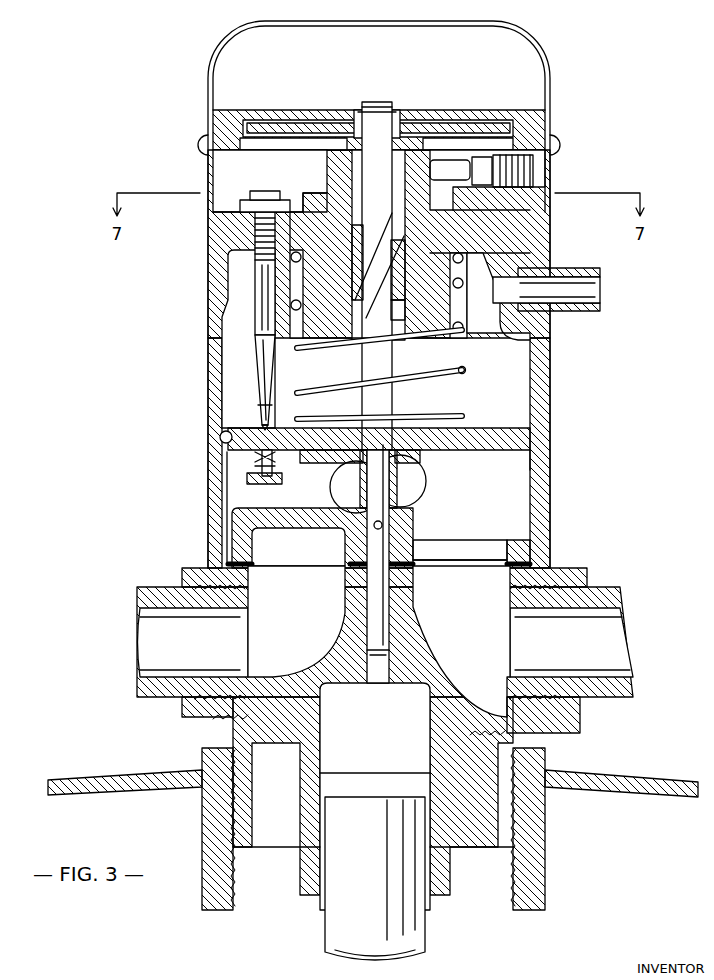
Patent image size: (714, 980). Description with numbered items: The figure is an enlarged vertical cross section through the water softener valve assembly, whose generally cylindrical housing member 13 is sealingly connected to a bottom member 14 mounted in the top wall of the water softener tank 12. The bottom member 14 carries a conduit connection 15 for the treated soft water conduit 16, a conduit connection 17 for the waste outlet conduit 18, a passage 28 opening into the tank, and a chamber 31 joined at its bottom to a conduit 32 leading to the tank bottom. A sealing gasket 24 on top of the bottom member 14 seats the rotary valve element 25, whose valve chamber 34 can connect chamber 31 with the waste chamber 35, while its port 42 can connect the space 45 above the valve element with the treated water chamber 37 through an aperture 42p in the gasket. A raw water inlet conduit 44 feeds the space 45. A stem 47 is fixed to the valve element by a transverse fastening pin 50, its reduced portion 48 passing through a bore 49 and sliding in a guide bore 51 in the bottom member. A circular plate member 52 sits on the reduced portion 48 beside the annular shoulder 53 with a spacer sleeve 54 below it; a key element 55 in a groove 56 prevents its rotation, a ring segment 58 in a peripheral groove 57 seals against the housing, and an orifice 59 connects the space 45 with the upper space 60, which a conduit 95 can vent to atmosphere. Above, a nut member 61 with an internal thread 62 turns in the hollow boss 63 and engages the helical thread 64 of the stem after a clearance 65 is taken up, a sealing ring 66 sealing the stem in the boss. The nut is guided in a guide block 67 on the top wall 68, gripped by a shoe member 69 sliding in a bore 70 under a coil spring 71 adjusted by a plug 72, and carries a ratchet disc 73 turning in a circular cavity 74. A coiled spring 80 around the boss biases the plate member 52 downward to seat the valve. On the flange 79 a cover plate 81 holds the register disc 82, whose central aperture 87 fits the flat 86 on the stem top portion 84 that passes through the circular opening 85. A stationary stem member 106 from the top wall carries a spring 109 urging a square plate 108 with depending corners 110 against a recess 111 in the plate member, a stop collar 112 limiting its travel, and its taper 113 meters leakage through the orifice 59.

The water softener tank 12 is at (655, 781).
The housing member 13 is at (548, 528).
The bottom member 14 is at (600, 578).
The conduit connection 15 is at (580, 724).
The conduit 16 is at (626, 630).
The conduit connection 17 is at (190, 718).
The waste outlet conduit 18 is at (142, 630).
The sealing gasket 24 is at (246, 566).
The rotary valve element 25 is at (238, 511).
The passage 28 is at (373, 872).
The chamber 31 is at (375, 796).
The conduit 32 is at (326, 956).
The valve chamber 34 is at (298, 547).
The chamber 35 is at (296, 621).
The chamber 37 is at (461, 641).
The port 42 is at (460, 546).
The aperture 42p is at (494, 568).
The raw water inlet conduit 44 is at (426, 477).
The space 45 is at (490, 494).
The stem 47 is at (398, 360).
The reduced portion 48 is at (398, 492).
The bore 49 is at (387, 590).
The transverse fastening pin 50 is at (383, 524).
The guide bore 51 is at (379, 684).
The plate member 52 is at (440, 448).
The annular shoulder 53 is at (402, 417).
The spacer sleeve 54 is at (332, 492).
The key element 55 is at (220, 436).
The groove 56 is at (226, 530).
The peripheral groove 57 is at (535, 432).
The ring segment 58 is at (548, 464).
The orifice 59 is at (262, 427).
The space 60 is at (240, 305).
The nut member 61 is at (462, 269).
The internal thread 62 is at (420, 262).
The hollow boss 63 is at (447, 307).
The helical thread 64 is at (383, 228).
The clearance 65 is at (350, 272).
The sealing ring 66 is at (356, 330).
The guide block 67 is at (310, 158).
The top wall 68 is at (214, 218).
The shoe member 69 is at (474, 158).
The bore 70 is at (510, 158).
The coil spring 71 is at (530, 228).
The plug 72 is at (547, 184).
The ratchet disc 73 is at (305, 196).
The circular cavity 74 is at (275, 196).
The flange 79 is at (212, 118).
The coiled spring 80 is at (468, 368).
The cover plate 81 is at (246, 126).
The register disc 82 is at (272, 122).
The top portion of stem 84 is at (372, 100).
The circular opening 85 is at (397, 134).
The flat 86 is at (393, 112).
The central aperture 87 is at (446, 160).
The conduit 95 is at (600, 290).
The stationary stem member 106 is at (255, 270).
The square plate 108 is at (255, 463).
The coil spring 109 is at (255, 480).
The depending corners 110 is at (290, 452).
The recess 111 is at (318, 448).
The stop collar 112 is at (258, 408).
The taper 113 is at (262, 382).